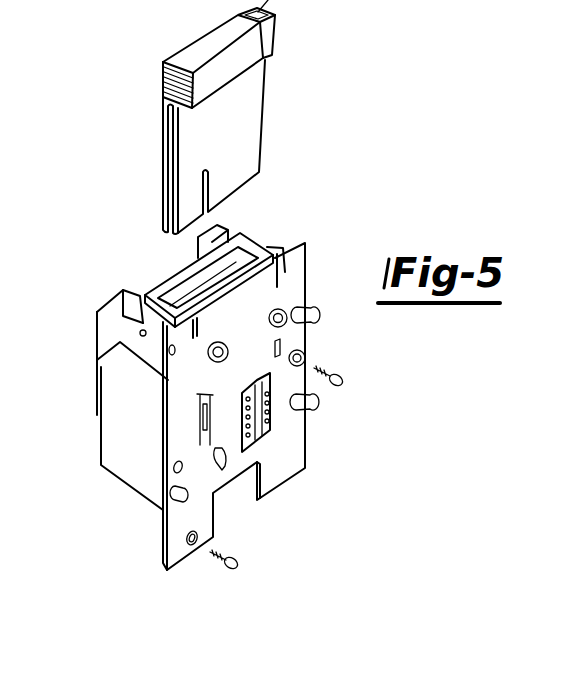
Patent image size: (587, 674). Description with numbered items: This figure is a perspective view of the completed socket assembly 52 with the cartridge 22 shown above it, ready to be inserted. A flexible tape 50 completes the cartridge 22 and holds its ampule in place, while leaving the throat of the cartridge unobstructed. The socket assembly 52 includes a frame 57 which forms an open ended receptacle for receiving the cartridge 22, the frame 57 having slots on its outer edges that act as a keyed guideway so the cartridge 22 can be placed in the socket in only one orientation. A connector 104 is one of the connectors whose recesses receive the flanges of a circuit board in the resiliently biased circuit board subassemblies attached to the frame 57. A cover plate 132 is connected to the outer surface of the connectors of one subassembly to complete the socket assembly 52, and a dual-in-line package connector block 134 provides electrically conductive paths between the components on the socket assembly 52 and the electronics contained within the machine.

The cartridge 22 is at (253, 117).
The flexible tape 50 is at (250, 51).
The frame 57 is at (268, 248).
The connector 104 is at (100, 346).
The socket assembly 52 is at (187, 425).
The cover plate 132 is at (168, 568).
The dual-in-line package connector block 134 is at (270, 417).